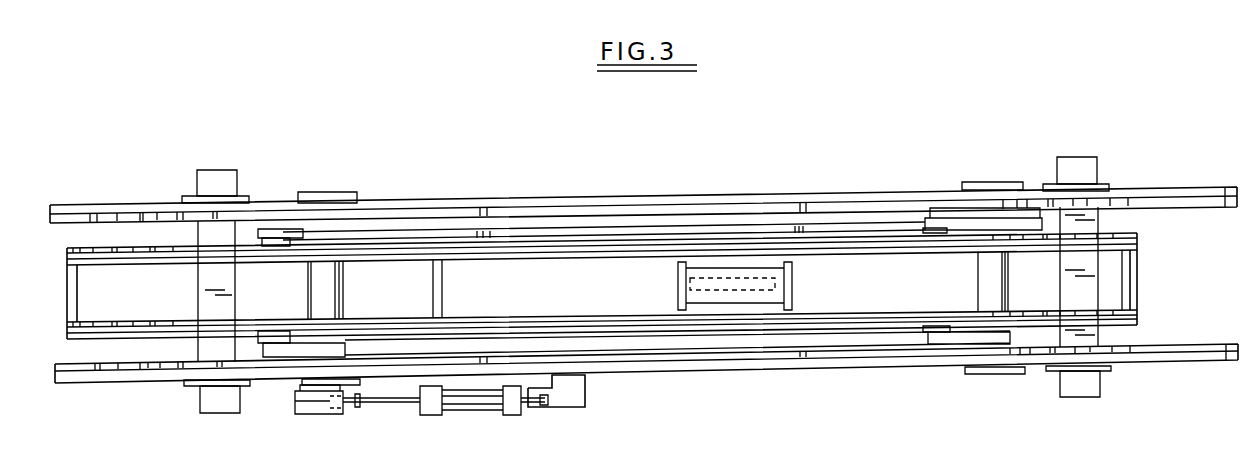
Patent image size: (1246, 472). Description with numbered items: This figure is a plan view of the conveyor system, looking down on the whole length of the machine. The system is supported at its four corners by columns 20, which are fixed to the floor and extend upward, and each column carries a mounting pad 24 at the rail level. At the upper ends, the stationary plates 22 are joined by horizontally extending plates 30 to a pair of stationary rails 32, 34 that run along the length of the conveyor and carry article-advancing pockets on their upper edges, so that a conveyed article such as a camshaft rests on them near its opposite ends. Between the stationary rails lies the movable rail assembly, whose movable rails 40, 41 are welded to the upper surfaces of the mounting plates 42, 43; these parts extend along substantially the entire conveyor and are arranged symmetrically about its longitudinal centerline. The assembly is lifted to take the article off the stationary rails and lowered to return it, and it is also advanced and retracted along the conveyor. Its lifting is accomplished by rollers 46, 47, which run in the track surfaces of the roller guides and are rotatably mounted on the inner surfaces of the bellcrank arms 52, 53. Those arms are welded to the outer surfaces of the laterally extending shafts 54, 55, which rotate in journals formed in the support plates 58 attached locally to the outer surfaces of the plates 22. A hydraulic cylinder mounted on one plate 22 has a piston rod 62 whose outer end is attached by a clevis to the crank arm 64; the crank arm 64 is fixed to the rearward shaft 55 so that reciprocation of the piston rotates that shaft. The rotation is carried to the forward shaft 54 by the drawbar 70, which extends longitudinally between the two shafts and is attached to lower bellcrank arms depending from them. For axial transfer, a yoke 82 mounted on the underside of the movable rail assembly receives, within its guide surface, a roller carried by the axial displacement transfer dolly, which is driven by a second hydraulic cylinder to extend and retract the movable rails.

The column 20 is at (217, 177).
The plate 22 is at (1192, 195).
The mounting plate 24 is at (246, 196).
The horizontally extending plate 30 is at (812, 198).
The stationary rail 32 is at (1219, 344).
The stationary rail 34 is at (1226, 192).
The movable rail 40 is at (115, 333).
The movable rail 41 is at (100, 259).
The mounting plate 42 is at (1138, 323).
The mounting plate 43 is at (1125, 233).
The roller 46 is at (278, 333).
The roller 47 is at (270, 248).
The bellcrank arm 52 is at (263, 348).
The bellcrank arm 53 is at (263, 239).
The shaft 54 is at (1008, 293).
The shaft 55 is at (347, 354).
The support plate 58 is at (348, 192).
The piston rod 62 is at (398, 406).
The crank arm 64 is at (294, 405).
The drawbar 70 is at (453, 232).
The yoke 82 is at (793, 289).